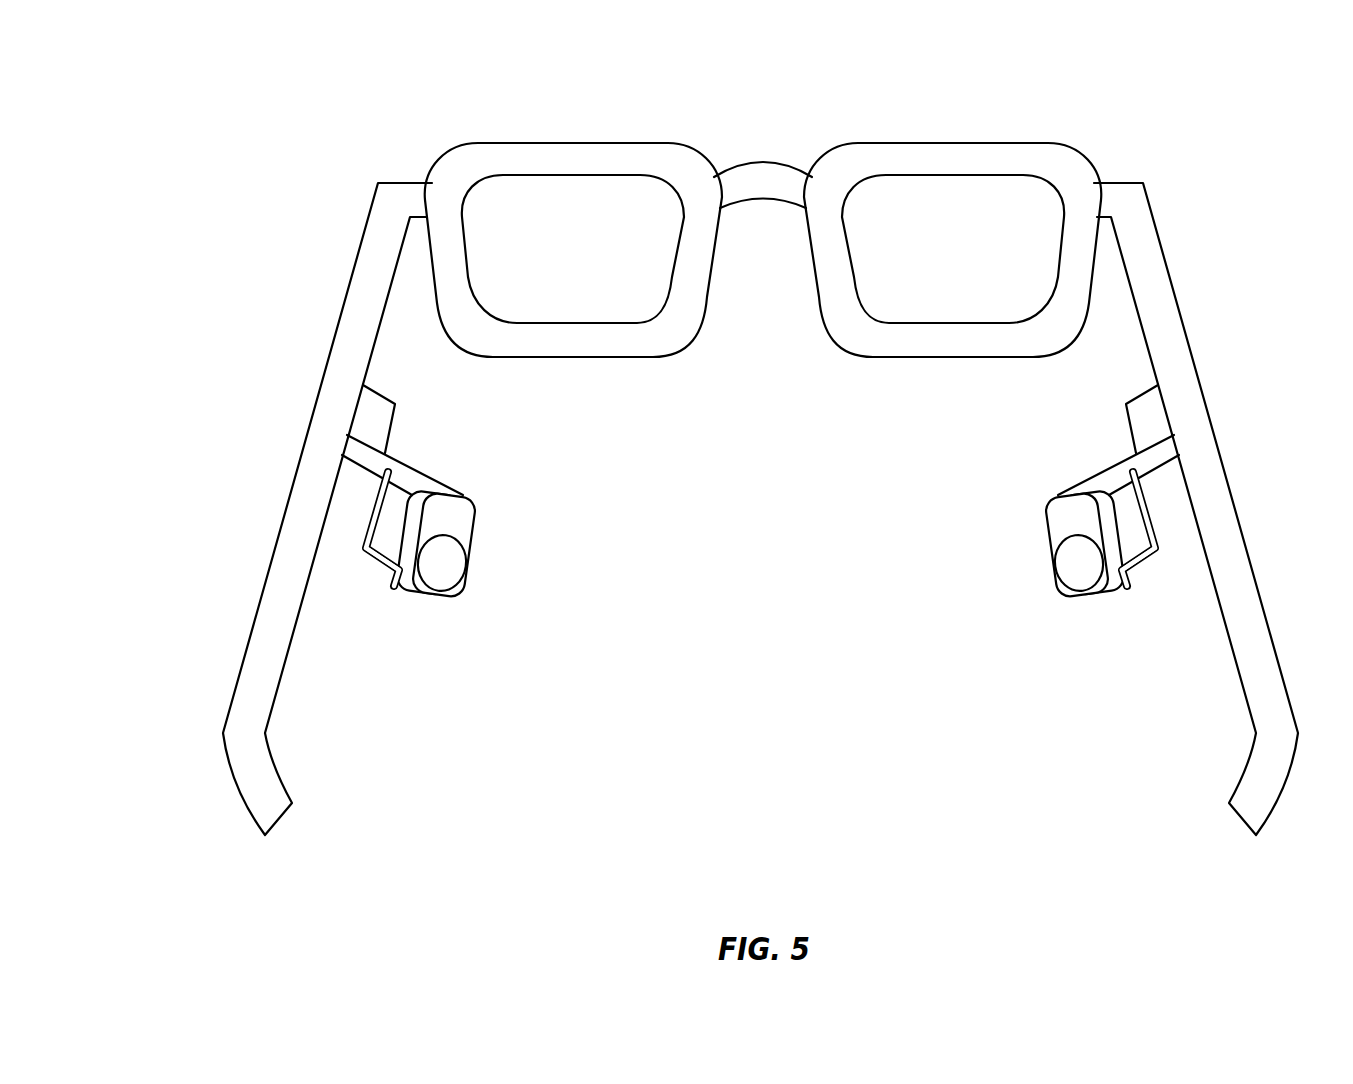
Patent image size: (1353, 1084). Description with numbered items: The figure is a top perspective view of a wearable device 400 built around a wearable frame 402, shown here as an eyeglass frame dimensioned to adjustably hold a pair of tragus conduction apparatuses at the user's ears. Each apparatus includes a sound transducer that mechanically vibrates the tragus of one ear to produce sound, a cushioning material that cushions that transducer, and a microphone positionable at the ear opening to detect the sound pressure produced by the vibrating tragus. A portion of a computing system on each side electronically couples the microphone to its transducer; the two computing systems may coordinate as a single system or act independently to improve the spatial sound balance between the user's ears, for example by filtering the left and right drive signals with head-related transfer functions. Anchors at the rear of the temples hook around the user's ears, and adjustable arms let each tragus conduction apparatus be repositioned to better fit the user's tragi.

The wearable device 400 is at (176, 145).
The wearable frame 402 is at (750, 204).